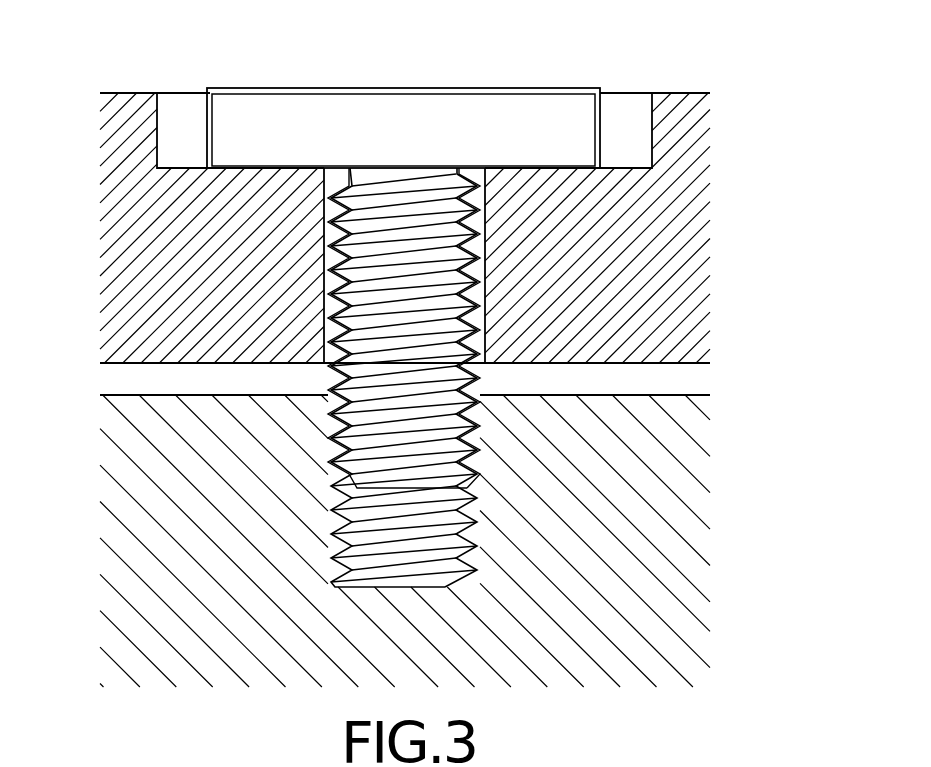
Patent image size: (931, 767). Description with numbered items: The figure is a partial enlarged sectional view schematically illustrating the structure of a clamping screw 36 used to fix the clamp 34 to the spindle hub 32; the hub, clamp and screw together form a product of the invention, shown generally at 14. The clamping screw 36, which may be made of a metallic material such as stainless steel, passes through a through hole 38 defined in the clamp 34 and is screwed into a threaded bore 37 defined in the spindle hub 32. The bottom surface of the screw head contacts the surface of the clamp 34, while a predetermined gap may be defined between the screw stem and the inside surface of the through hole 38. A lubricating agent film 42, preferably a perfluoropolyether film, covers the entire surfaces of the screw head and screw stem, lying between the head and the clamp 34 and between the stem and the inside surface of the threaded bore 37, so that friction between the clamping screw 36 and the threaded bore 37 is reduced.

The mounting structure 14 is at (128, 91).
The spindle hub 32 is at (687, 395).
The clamp 34 is at (681, 93).
The clamping screw 36 is at (550, 92).
The threaded bore 37 is at (349, 509).
The through hole 38 is at (325, 231).
The lubricating agent film 42 is at (487, 313).